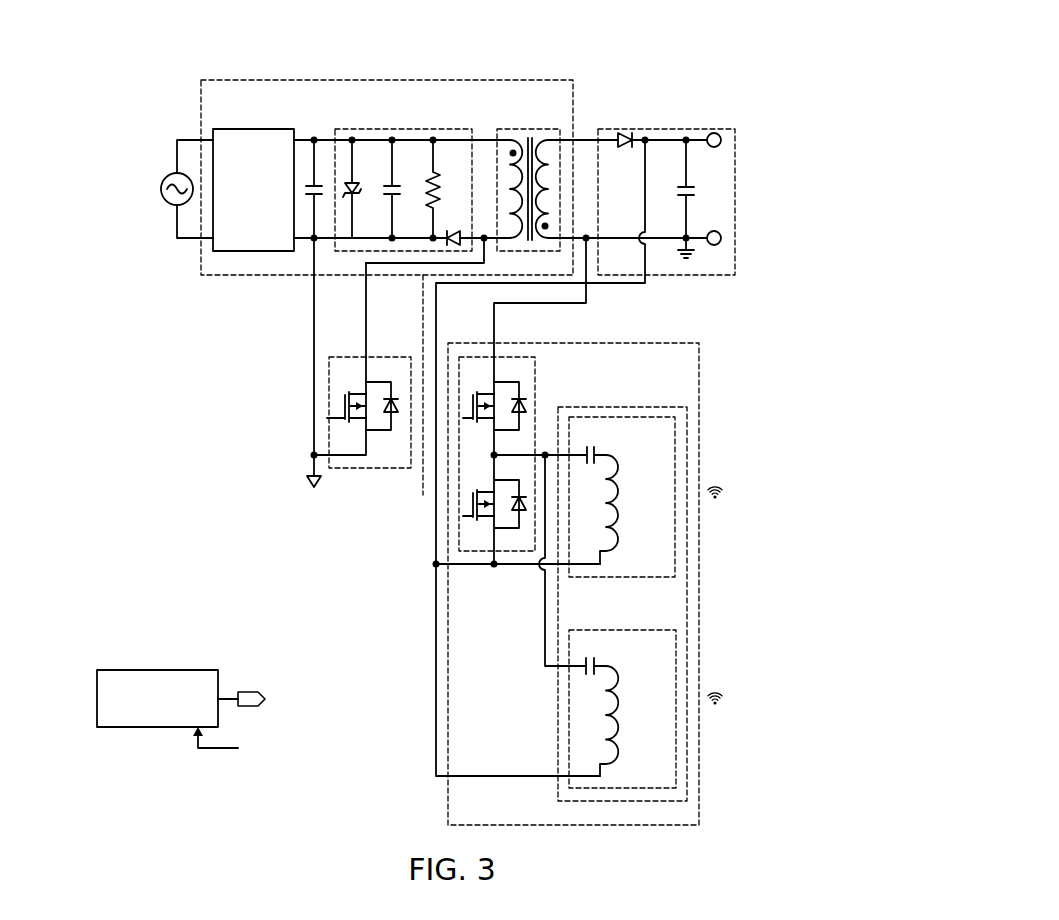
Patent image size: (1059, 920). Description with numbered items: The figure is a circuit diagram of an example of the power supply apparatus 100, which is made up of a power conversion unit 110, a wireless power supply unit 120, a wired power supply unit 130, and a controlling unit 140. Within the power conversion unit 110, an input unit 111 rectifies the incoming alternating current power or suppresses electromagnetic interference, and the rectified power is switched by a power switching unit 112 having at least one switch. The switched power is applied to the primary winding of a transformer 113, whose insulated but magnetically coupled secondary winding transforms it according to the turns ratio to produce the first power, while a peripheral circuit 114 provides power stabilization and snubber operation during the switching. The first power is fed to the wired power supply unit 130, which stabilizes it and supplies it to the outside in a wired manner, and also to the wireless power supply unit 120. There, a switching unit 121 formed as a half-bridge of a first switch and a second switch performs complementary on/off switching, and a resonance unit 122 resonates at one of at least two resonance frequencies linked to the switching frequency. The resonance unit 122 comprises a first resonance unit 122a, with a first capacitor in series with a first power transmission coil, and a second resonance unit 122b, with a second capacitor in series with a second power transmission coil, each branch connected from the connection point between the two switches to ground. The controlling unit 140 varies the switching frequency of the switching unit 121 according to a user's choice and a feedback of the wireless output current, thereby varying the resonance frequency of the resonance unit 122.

The power supply apparatus 100 is at (657, 27).
The power conversion unit 110 is at (379, 79).
The input unit 111 is at (252, 129).
The power switching unit 112 is at (341, 357).
The transformer 113 is at (527, 129).
The peripheral circuit 114 is at (397, 129).
The wireless power supply unit 120 is at (679, 343).
The switching unit 121 is at (460, 534).
The resonance unit 122 is at (639, 405).
The first resonance unit 122a is at (590, 417).
The second resonance unit 122b is at (595, 630).
The wired power supply unit 130 is at (670, 129).
The controlling unit 140 is at (97, 700).